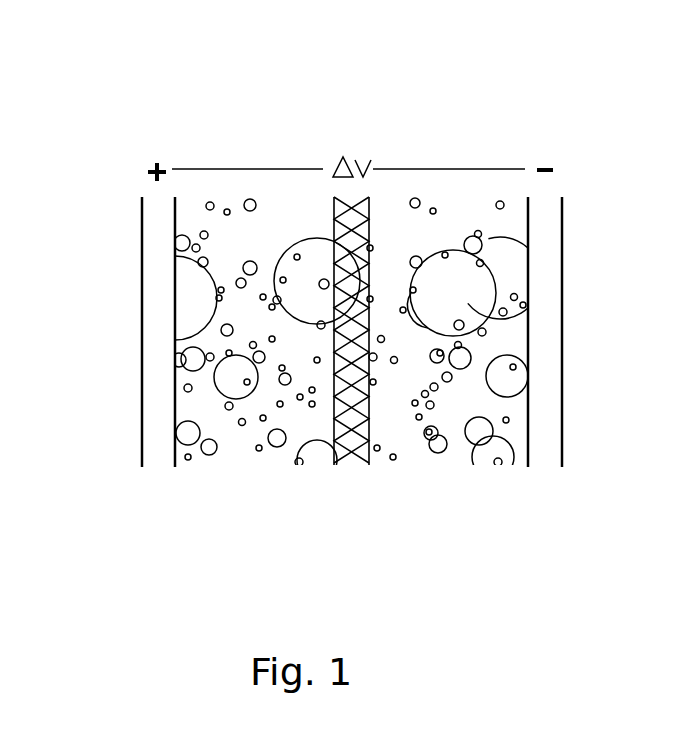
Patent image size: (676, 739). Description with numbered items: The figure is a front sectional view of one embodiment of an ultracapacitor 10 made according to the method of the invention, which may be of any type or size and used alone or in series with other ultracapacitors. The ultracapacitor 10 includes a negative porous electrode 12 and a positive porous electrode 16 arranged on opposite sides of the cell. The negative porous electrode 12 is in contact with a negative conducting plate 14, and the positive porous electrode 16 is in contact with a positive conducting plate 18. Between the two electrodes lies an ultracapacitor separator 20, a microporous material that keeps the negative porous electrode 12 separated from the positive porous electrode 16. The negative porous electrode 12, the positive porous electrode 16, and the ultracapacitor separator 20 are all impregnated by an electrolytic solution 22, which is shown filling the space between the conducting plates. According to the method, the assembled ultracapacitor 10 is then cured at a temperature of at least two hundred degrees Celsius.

The ultracapacitor 10 is at (328, 138).
The negative porous electrode 12 is at (453, 265).
The negative conducting plate 14 is at (550, 283).
The positive porous electrode 16 is at (188, 308).
The positive conducting plate 18 is at (155, 356).
The ultracapacitor separator 20 is at (352, 453).
The electrolytic solution 22 is at (220, 243).